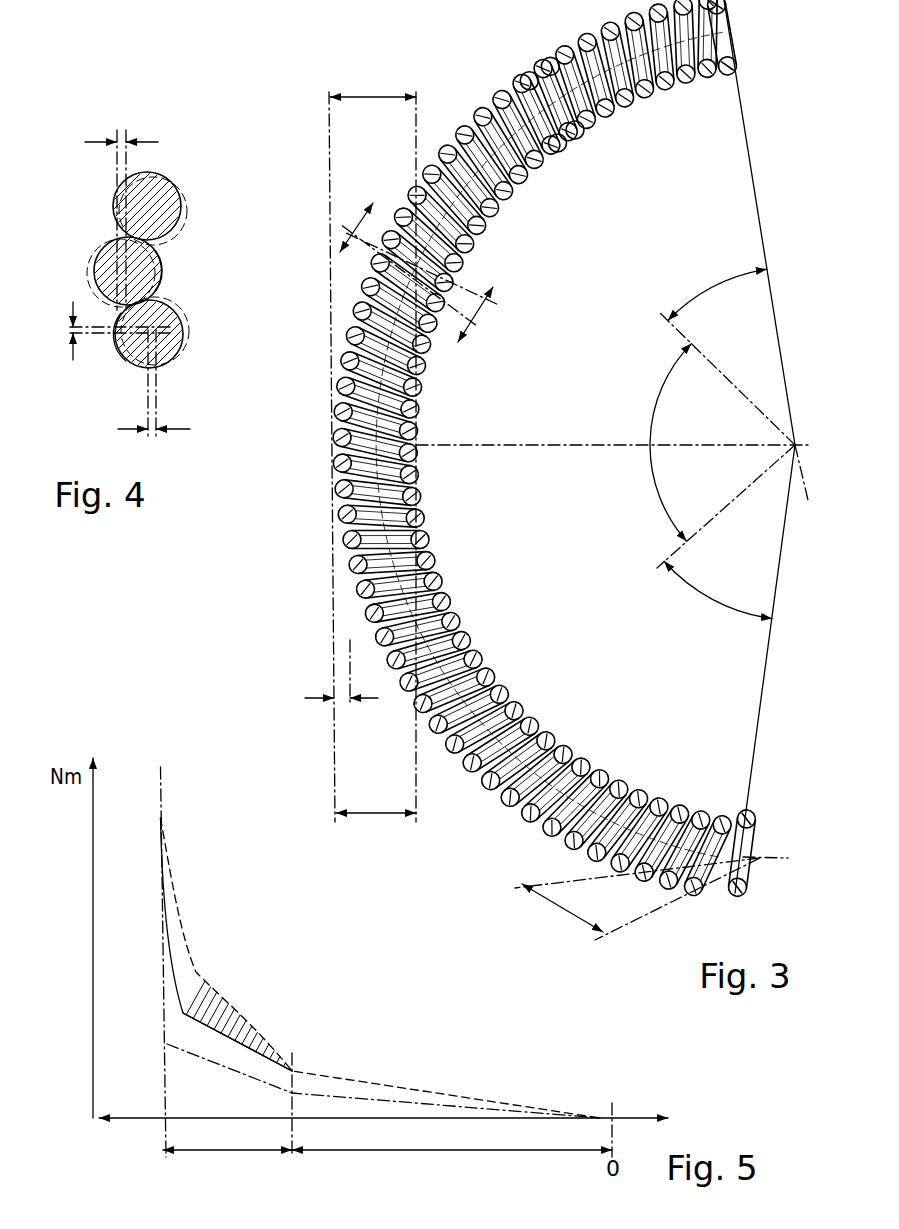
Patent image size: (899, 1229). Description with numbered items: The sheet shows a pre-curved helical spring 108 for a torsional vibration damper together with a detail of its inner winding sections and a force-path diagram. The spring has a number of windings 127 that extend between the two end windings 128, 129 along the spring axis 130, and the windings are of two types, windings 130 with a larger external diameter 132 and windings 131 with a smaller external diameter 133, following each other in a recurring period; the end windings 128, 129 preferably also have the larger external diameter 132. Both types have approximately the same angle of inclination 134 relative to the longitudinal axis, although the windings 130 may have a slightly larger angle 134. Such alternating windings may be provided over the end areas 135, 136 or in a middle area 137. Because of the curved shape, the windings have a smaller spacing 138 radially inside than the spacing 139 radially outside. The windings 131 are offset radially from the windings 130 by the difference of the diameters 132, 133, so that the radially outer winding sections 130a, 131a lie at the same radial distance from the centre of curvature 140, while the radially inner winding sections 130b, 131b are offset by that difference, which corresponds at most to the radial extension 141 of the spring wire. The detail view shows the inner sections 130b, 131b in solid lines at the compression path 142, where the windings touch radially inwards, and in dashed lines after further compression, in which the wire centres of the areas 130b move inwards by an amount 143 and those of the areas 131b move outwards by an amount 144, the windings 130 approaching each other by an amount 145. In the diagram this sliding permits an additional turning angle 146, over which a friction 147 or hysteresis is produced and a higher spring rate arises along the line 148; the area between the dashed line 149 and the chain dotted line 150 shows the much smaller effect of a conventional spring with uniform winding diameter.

In FIG. 3, the helical spring 108 is at (470, 632).
In FIG. 3, the windings 127 is at (514, 703).
In FIG. 3, the end winding 128 is at (750, 819).
In FIG. 3, the end winding 129 is at (736, 67).
In FIG. 3, the winding with larger external diameter 130 is at (467, 262).
In FIG. 4, the winding with larger external diameter 130 is at (150, 174).
In FIG. 3, the radially outer winding section of winding 130 130a is at (549, 62).
In FIG. 3, the radially inner winding section of winding 130 130b is at (582, 134).
In FIG. 4, the radially inner winding section of winding 130 130b is at (122, 348).
In FIG. 3, the winding with smaller external diameter 131 is at (526, 177).
In FIG. 4, the winding with smaller external diameter 131 is at (163, 270).
In FIG. 3, the radially outer winding section of winding 131 131a is at (526, 77).
In FIG. 3, the radially inner winding section of winding 131 131b is at (559, 152).
In FIG. 4, the radially inner winding section of winding 131 131b is at (162, 283).
In FIG. 3, the larger external diameter 132 is at (351, 95).
In FIG. 3, the smaller external diameter 133 is at (372, 816).
In FIG. 3, the angle of inclination 134 is at (560, 925).
In FIG. 3, the end area 135 is at (710, 288).
In FIG. 3, the end area 136 is at (722, 602).
In FIG. 3, the middle area 137 is at (655, 420).
In FIG. 3, the radially inner spacing 138 is at (482, 312).
In FIG. 3, the radially outer spacing 139 is at (355, 238).
In FIG. 3, the centre of curvature 140 is at (808, 492).
In FIG. 3, the radial extension of the spring wire 141 is at (345, 700).
In FIG. 5, the compression path 142 is at (442, 1151).
In FIG. 4, the inward displacement amount 143 is at (153, 434).
In FIG. 4, the outward displacement amount 144 is at (121, 140).
In FIG. 4, the approach amount 145 is at (71, 327).
In FIG. 5, the deformation path 146 is at (225, 1151).
In FIG. 5, the friction 147 is at (231, 996).
In FIG. 5, the line of higher spring rate 148 is at (250, 1025).
In FIG. 5, the dashed line 149 is at (207, 1025).
In FIG. 5, the chain dotted line 150 is at (227, 1070).